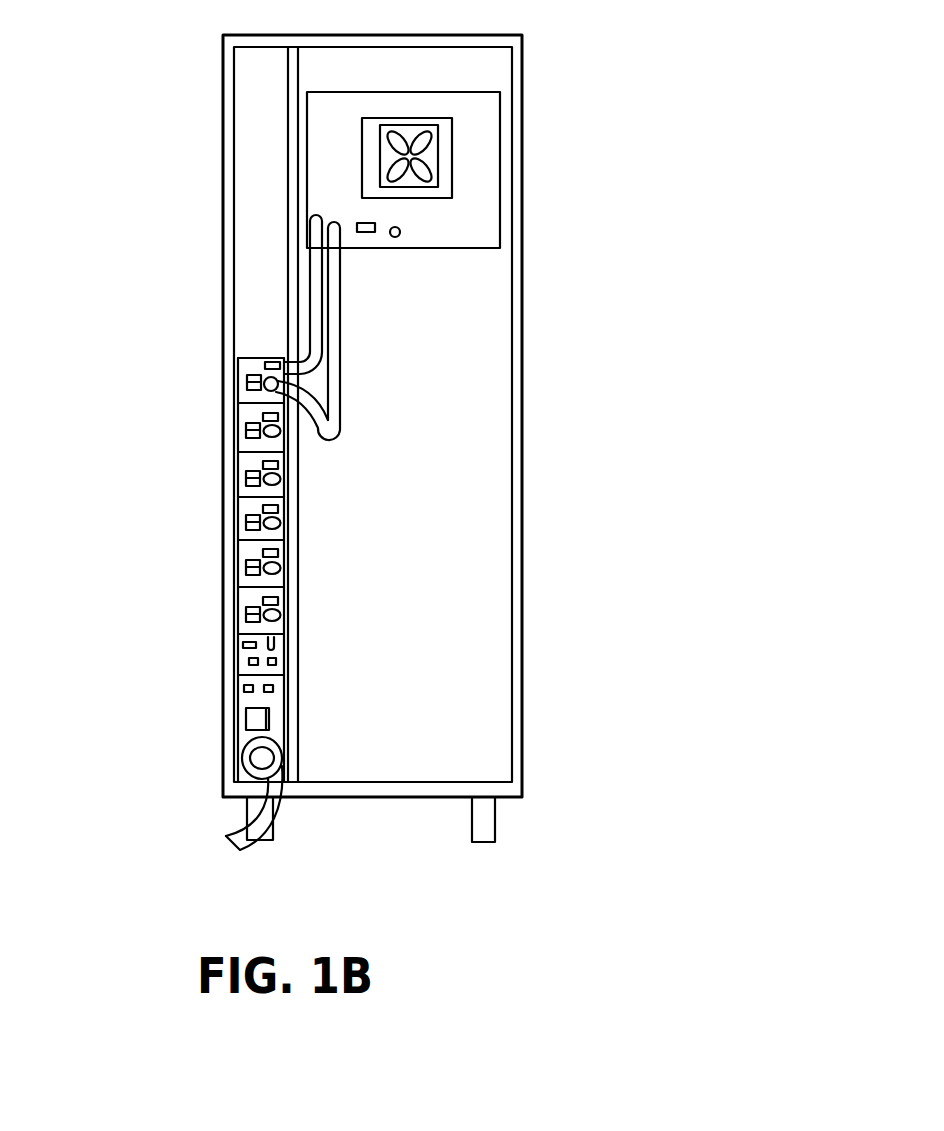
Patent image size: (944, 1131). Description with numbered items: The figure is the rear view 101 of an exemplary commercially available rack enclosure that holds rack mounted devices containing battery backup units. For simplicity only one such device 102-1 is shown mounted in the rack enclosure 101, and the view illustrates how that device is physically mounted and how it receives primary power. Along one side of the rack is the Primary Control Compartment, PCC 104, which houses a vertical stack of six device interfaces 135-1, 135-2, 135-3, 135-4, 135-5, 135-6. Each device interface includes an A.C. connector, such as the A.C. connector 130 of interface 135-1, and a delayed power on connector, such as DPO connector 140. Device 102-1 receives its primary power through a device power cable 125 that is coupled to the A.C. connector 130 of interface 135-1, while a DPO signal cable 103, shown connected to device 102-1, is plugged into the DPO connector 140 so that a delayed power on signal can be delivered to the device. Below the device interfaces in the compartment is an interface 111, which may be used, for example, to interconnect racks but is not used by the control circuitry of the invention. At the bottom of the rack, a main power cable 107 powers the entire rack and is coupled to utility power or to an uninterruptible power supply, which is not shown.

The rear view 101 is at (420, 798).
The device 102-1 is at (500, 171).
The DPO signal cable 103 is at (320, 268).
The Primary Control Compartment 104 is at (247, 570).
The main power cable 107 is at (237, 832).
The interface 111 is at (247, 652).
The device power cable 125 is at (340, 292).
The A.C. connector 130 is at (268, 388).
The device interface 135-1 is at (247, 362).
The device interface 135-2 is at (247, 437).
The device interface 135-3 is at (247, 463).
The device interface 135-4 is at (247, 507).
The device interface 135-5 is at (247, 548).
The device interface 135-6 is at (247, 598).
The DPO connector 140 is at (283, 362).